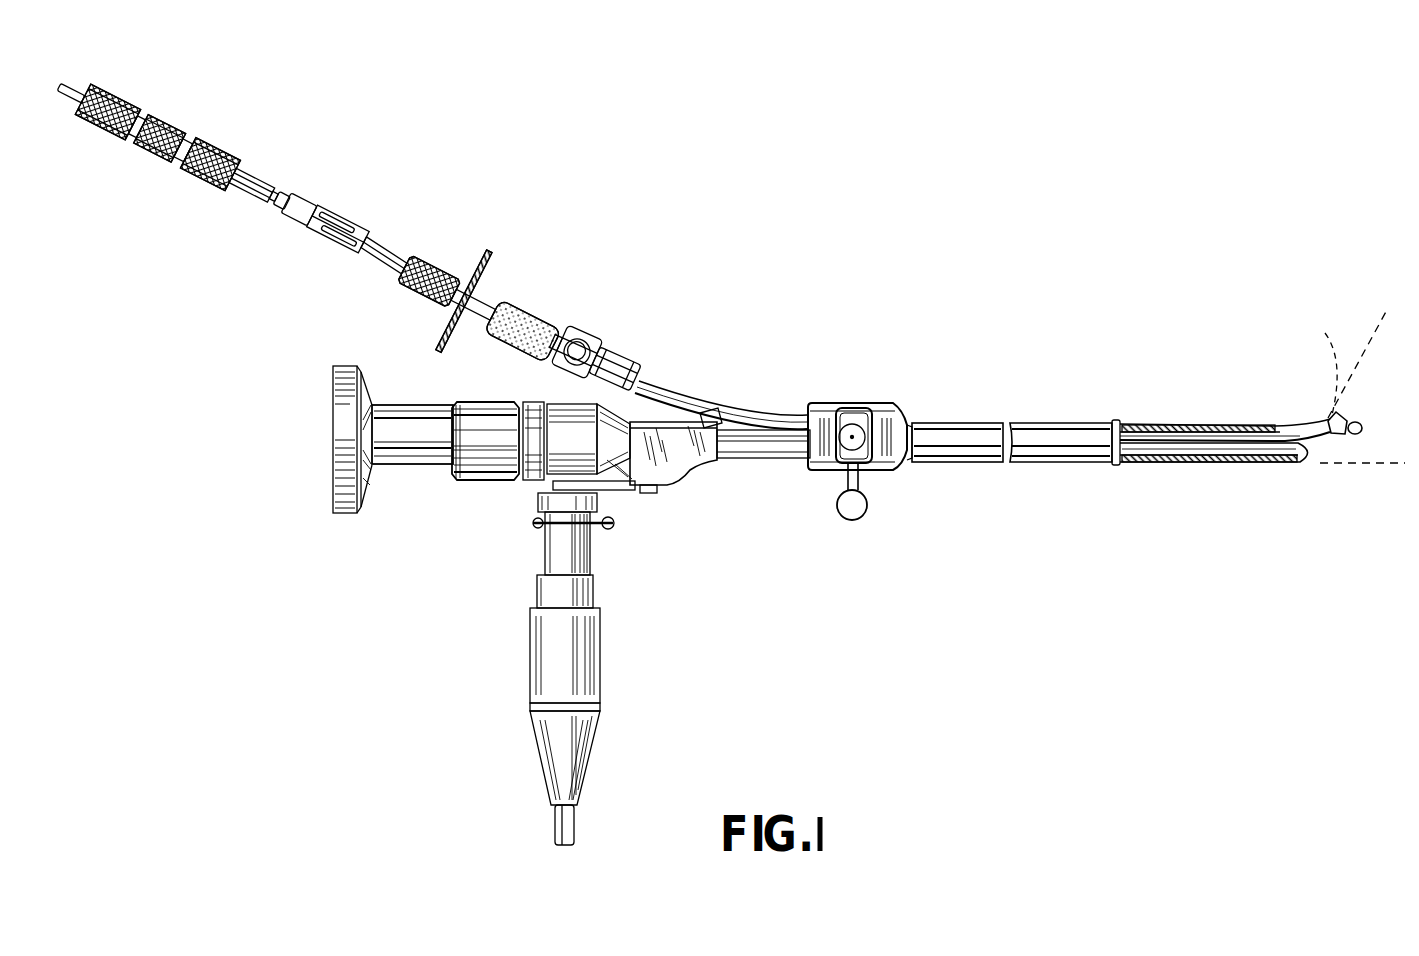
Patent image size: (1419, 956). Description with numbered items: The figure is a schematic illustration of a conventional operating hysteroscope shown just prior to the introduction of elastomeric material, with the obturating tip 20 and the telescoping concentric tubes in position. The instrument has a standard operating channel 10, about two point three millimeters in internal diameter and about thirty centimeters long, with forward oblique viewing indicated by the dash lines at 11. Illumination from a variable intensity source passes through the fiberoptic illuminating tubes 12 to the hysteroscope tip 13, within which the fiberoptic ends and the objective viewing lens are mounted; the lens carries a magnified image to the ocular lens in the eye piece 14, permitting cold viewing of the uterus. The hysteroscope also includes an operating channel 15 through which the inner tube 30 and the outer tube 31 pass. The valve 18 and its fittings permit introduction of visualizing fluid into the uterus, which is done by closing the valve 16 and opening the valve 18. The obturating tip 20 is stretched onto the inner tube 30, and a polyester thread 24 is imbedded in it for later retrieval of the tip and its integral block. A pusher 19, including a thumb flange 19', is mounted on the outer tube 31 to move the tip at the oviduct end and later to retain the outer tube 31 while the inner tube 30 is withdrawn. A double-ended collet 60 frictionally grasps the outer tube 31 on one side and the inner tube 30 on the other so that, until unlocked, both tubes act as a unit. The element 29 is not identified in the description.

The operating channel 10 is at (1057, 423).
The forward oblique viewing 11 is at (1254, 373).
The fiberoptic illuminating tubes 12 is at (553, 823).
The hysteroscope tip 13 is at (1280, 456).
The eye piece 14 is at (332, 498).
The operating channel 15 is at (705, 396).
The valve 16 is at (578, 350).
The valve 18 is at (873, 406).
The pusher 19 is at (436, 292).
The thumb flange 19' is at (473, 274).
The obturating tip 20 is at (1358, 423).
The polyester thread 24 is at (1345, 412).
The grip sleeve 29 is at (522, 308).
The inner tube 30 is at (73, 92).
The outer tube 31 is at (383, 262).
The double-ended collet 60 is at (196, 114).